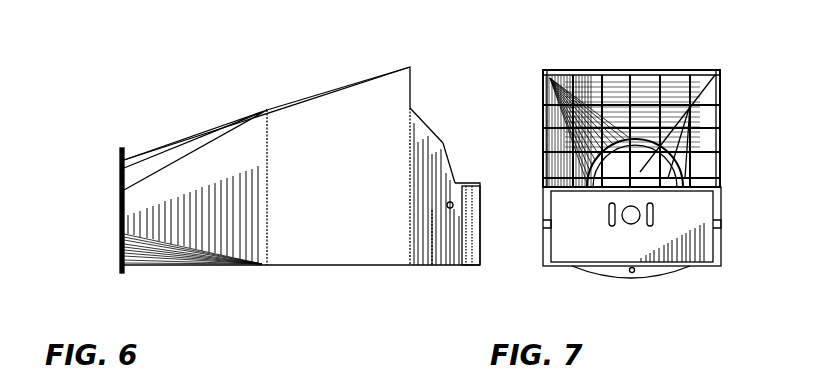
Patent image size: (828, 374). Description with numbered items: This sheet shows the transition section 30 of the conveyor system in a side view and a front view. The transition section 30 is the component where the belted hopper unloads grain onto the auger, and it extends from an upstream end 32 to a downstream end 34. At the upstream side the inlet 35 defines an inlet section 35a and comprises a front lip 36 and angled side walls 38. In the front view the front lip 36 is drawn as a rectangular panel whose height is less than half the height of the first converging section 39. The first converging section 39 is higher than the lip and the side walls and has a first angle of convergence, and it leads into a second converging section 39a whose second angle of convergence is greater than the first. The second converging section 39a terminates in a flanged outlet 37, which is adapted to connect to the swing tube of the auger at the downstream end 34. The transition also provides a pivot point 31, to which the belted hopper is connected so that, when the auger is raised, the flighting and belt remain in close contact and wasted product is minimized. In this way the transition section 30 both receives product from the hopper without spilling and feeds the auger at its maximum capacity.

In FIG. 6, the transition section 30 is at (196, 79).
In FIG. 7, the transition section 30 is at (735, 128).
In FIG. 6, the pivot point 31 is at (453, 205).
In FIG. 6, the upstream end 32 is at (440, 98).
In FIG. 6, the downstream end 34 is at (120, 150).
In FIG. 6, the inlet 35 is at (460, 163).
In FIG. 6, the inlet section 35a is at (437, 143).
In FIG. 6, the front lip 36 is at (463, 230).
In FIG. 7, the front lip 36 is at (695, 207).
In FIG. 6, the flanged outlet 37 is at (122, 207).
In FIG. 6, the angled side walls 38 is at (432, 210).
In FIG. 6, the first converging section 39 is at (354, 172).
In FIG. 6, the second converging section 39a is at (262, 154).